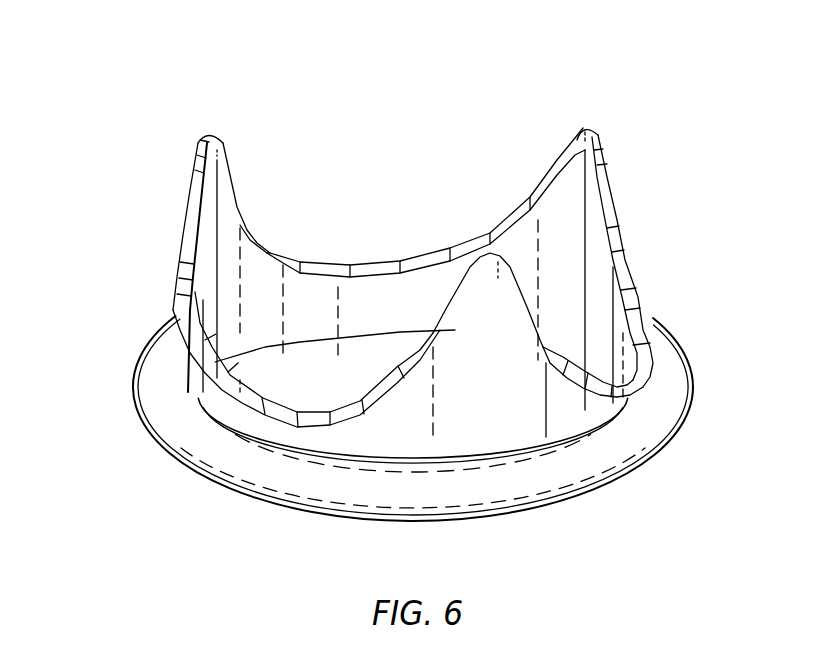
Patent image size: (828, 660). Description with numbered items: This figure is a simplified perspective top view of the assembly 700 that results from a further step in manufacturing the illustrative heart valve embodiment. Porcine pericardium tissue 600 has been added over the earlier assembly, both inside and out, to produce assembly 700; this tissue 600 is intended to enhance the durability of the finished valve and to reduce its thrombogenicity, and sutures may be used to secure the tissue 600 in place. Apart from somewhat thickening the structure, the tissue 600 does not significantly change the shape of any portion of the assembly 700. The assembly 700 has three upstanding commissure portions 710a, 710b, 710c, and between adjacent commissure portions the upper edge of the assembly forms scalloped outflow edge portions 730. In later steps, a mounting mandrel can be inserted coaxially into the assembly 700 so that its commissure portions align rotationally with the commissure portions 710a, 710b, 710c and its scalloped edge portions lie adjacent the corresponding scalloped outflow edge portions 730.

The assembly 700 is at (312, 48).
The porcine pericardium tissue 600 is at (413, 448).
The commissure portion 710a is at (197, 182).
The commissure portion 710b is at (488, 224).
The commissure portion 710c is at (597, 160).
The scalloped outflow edge portion 730 is at (280, 250).